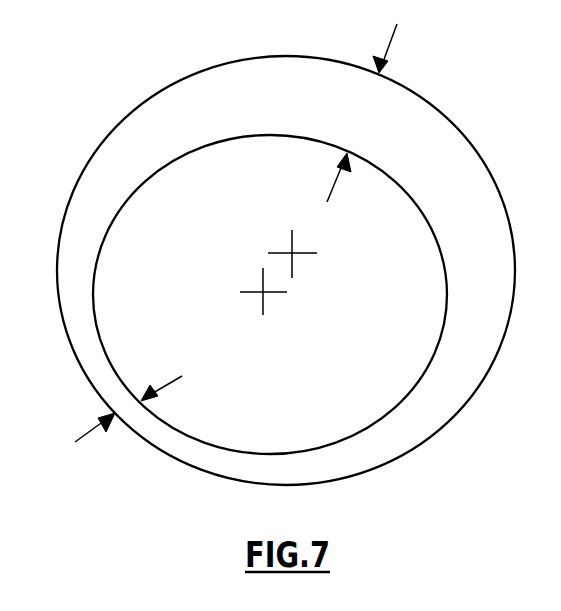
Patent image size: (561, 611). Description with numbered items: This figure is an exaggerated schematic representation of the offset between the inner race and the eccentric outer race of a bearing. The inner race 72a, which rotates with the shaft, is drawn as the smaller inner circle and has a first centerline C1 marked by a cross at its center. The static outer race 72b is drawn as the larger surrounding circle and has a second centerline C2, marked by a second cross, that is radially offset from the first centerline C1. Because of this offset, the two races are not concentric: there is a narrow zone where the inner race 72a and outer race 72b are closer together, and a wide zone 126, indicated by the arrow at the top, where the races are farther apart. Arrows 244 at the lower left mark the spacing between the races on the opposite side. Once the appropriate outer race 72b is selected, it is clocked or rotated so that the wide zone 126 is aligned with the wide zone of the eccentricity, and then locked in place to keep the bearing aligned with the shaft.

The outer race 72b is at (111, 131).
The inner race 72a is at (138, 188).
The wide zone 126 is at (391, 39).
The wall thickness 244 is at (88, 433).
The first centerline C1 is at (262, 293).
The second centerline C2 is at (293, 253).